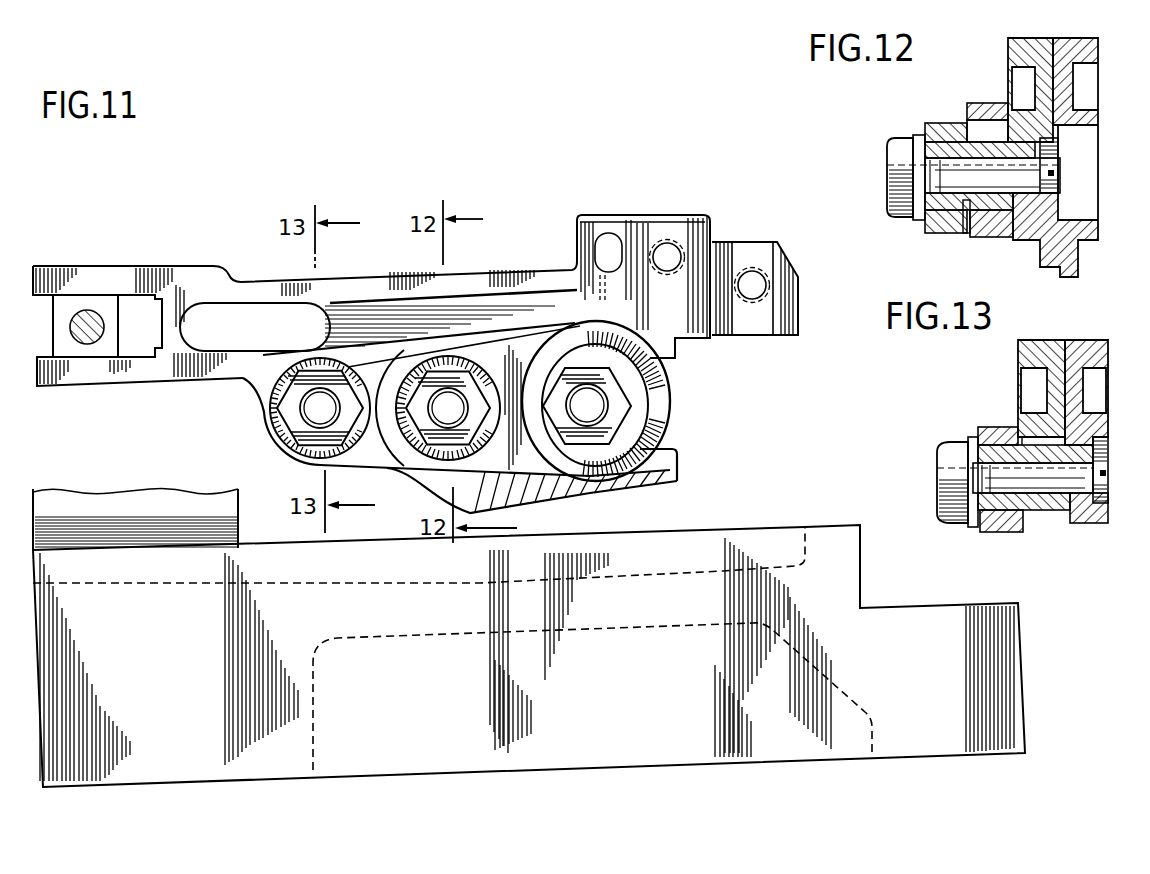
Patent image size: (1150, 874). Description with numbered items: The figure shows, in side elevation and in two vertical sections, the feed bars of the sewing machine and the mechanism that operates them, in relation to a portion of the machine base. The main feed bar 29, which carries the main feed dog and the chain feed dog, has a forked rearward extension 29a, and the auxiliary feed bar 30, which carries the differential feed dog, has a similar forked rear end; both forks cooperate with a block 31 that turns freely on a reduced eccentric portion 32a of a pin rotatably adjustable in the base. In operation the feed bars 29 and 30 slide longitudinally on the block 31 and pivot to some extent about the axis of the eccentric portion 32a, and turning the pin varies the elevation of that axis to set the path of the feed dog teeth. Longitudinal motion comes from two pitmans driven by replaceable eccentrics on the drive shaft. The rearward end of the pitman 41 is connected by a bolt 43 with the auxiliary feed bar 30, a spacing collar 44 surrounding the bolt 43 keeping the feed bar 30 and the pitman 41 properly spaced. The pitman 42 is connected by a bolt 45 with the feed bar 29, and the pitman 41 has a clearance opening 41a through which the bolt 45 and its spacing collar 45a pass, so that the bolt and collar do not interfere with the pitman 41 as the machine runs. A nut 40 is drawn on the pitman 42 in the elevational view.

In FIG. 11, the feed bar 29 is at (482, 278).
In FIG. 12, the feed bar 29 is at (1008, 50).
In FIG. 13, the feed bar 29 is at (1018, 356).
In FIG. 11, the forked rearward extension 29a is at (133, 276).
In FIG. 11, the feed bar 30 is at (787, 290).
In FIG. 12, the feed bar 30 is at (1098, 50).
In FIG. 13, the feed bar 30 is at (1108, 356).
In FIG. 11, the block 31 is at (103, 301).
In FIG. 11, the reduced eccentric portion 32a is at (70, 333).
In FIG. 11, the pivot nut 40 is at (620, 406).
In FIG. 11, the pitman 41 is at (372, 363).
In FIG. 12, the pitman 41 is at (983, 236).
In FIG. 13, the pitman 41 is at (1003, 532).
In FIG. 11, the clearance opening 41a is at (388, 427).
In FIG. 12, the clearance opening 41a is at (980, 128).
In FIG. 11, the pitman 42 is at (650, 373).
In FIG. 12, the pitman 42 is at (943, 229).
In FIG. 11, the bolt 43 is at (316, 408).
In FIG. 13, the bolt 43 is at (1109, 461).
In FIG. 13, the spacing collar 44 is at (1054, 510).
In FIG. 11, the bolt 45 is at (450, 406).
In FIG. 12, the bolt 45 is at (1052, 160).
In FIG. 12, the spacing collar 45a is at (963, 204).